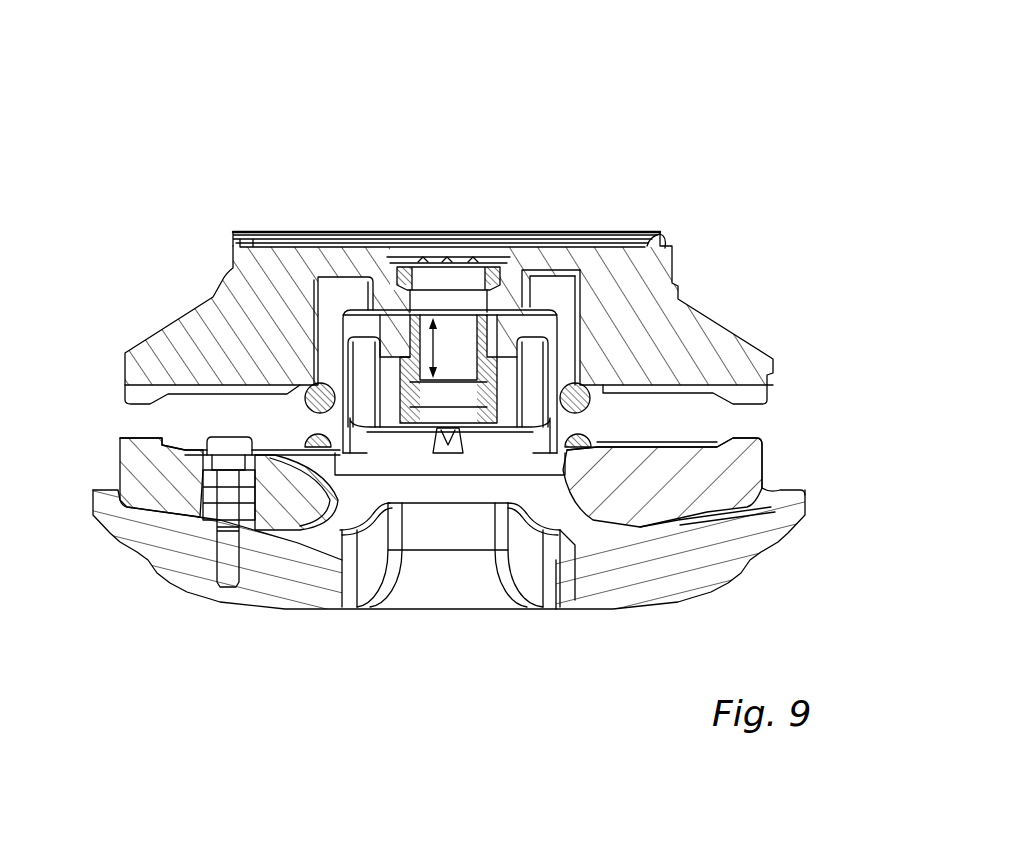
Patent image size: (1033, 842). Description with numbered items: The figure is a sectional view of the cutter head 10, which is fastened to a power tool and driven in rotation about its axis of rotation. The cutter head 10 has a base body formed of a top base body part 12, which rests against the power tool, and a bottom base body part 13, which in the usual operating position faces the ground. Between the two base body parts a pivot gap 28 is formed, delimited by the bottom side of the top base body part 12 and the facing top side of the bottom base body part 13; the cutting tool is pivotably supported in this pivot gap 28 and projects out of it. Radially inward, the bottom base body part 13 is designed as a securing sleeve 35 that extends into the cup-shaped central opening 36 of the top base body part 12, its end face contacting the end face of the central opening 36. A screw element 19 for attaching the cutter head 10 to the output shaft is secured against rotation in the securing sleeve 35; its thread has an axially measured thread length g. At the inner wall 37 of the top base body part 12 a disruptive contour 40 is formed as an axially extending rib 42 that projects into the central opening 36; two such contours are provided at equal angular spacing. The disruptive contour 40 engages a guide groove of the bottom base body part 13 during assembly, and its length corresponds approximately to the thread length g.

The cutter head 10 is at (168, 130).
The top base body part 12 is at (176, 316).
The bottom base body part 13 is at (126, 554).
The screw element 19 is at (474, 355).
The pivot gap 28 is at (130, 421).
The securing sleeve 35 is at (530, 306).
The central opening 36 is at (330, 319).
The inner wall 37 is at (566, 386).
The disruptive contour 40 is at (588, 303).
The rib 42 is at (584, 341).
The thread length g is at (407, 312).